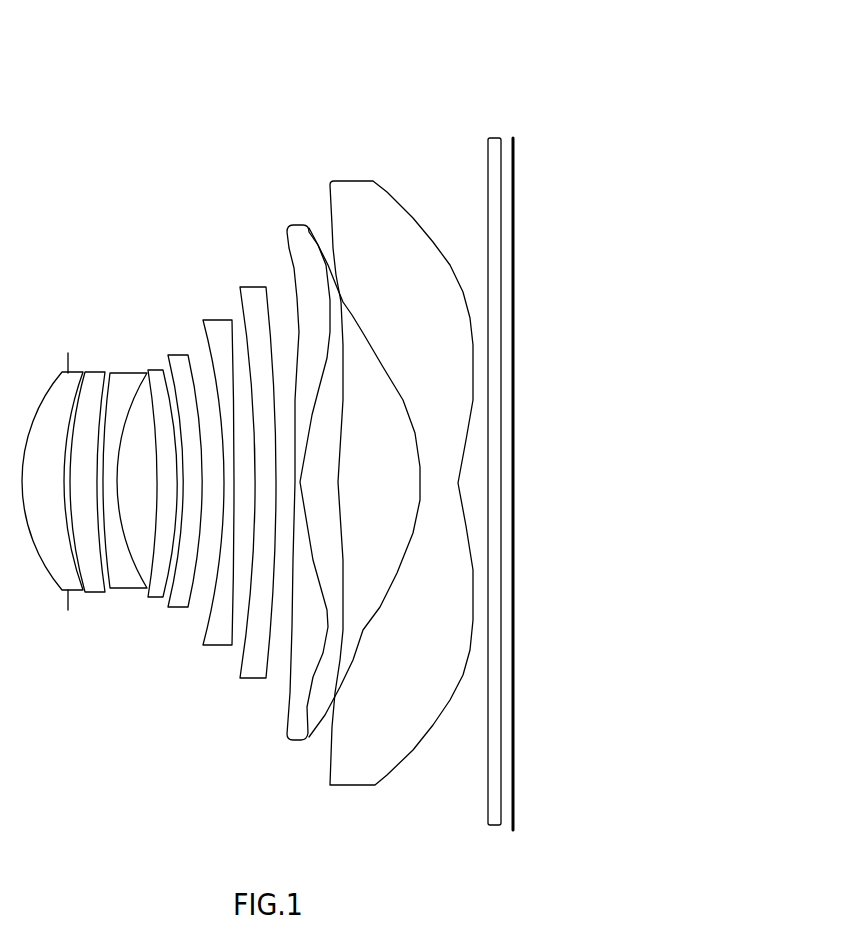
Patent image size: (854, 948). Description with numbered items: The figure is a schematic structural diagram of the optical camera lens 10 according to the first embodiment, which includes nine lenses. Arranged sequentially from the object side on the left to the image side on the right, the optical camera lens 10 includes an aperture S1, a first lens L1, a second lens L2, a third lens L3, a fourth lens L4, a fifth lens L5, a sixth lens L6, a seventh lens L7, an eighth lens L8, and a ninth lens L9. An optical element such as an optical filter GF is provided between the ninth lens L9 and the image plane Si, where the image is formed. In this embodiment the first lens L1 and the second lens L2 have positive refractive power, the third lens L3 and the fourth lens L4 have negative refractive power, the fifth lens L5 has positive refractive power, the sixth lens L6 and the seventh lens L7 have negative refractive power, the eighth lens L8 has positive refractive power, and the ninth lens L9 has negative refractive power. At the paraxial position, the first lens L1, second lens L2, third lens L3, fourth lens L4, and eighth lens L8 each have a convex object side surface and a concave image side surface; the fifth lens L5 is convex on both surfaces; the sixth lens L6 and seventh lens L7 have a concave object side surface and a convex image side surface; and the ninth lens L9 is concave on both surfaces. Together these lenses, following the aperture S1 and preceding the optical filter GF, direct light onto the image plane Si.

The optical camera lens 10 is at (282, 57).
The aperture S1 is at (54, 476).
The first lens L1 is at (54, 468).
The second lens L2 is at (88, 469).
The third lens L3 is at (125, 467).
The fourth lens L4 is at (160, 467).
The fifth lens L5 is at (183, 469).
The sixth lens L6 is at (218, 469).
The seventh lens L7 is at (258, 468).
The eighth lens L8 is at (352, 469).
The ninth lens L9 is at (401, 469).
The optical filter GF is at (488, 467).
The image plane Si is at (511, 469).